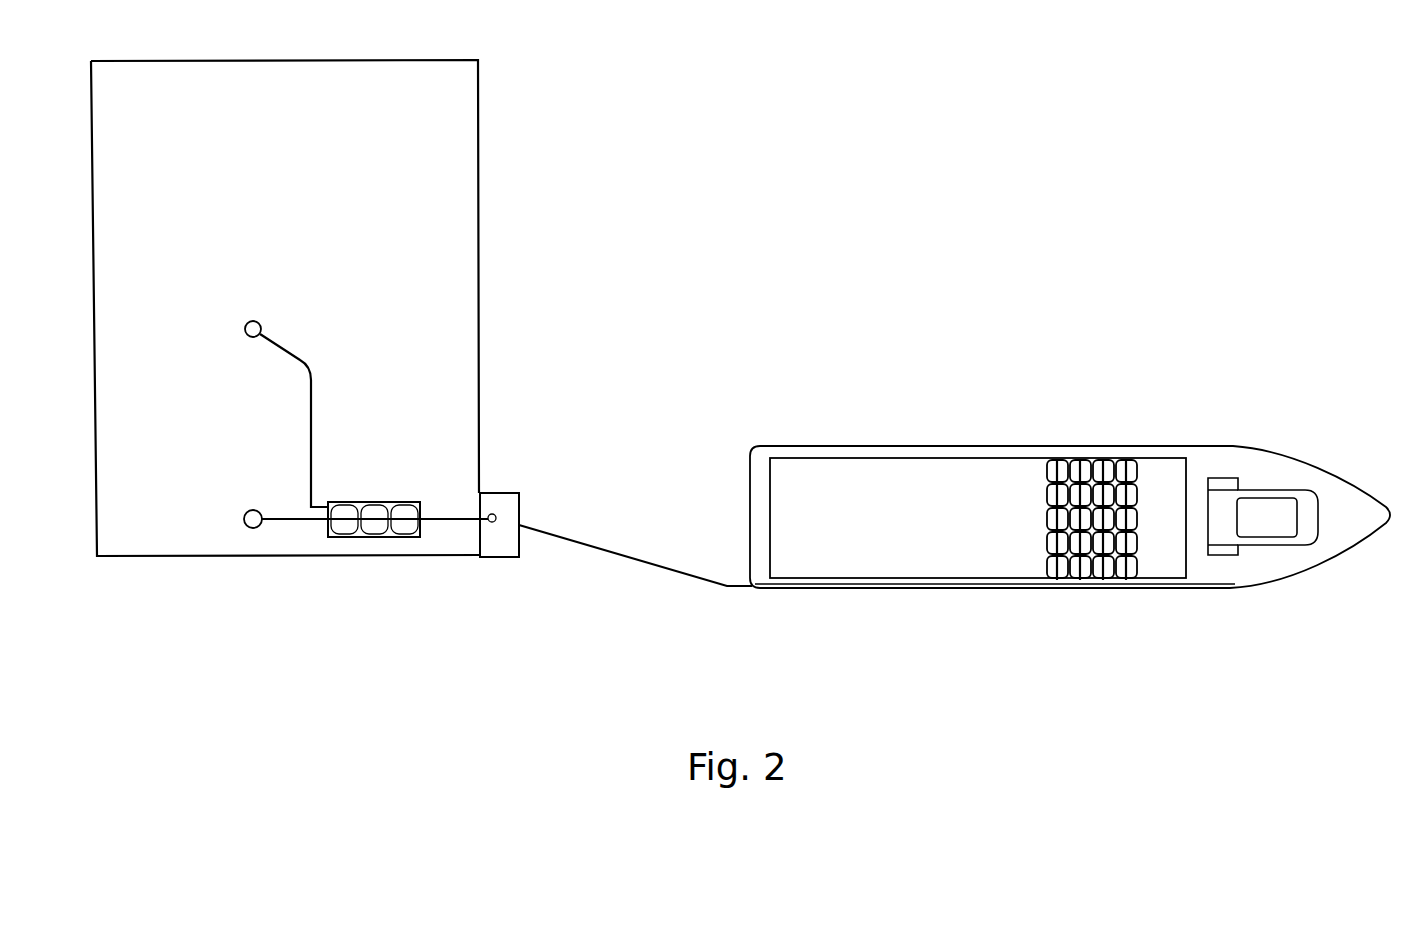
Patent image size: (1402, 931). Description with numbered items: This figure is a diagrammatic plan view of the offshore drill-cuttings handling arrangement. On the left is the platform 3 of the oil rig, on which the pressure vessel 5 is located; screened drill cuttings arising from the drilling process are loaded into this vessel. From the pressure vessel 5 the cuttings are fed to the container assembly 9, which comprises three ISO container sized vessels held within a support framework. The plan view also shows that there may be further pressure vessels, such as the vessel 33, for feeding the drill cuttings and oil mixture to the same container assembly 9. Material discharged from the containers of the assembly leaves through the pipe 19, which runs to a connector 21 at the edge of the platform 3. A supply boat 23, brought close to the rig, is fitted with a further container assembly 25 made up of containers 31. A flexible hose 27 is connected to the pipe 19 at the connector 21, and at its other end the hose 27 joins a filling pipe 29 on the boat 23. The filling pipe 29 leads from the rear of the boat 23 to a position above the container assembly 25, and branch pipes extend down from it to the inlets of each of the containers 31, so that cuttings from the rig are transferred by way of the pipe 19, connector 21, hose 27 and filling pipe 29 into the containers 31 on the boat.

The platform 3 is at (447, 302).
The pressure vessel 5 is at (244, 516).
The container assembly 9 is at (400, 502).
The pipe 19 is at (450, 522).
The connector 21 is at (500, 541).
The supply boat 23 is at (952, 467).
The container assembly 25 is at (1095, 450).
The flexible hose 27 is at (600, 550).
The filling pipe 29 is at (882, 590).
The container 31 is at (1134, 492).
The pressure vessel 33 is at (262, 328).